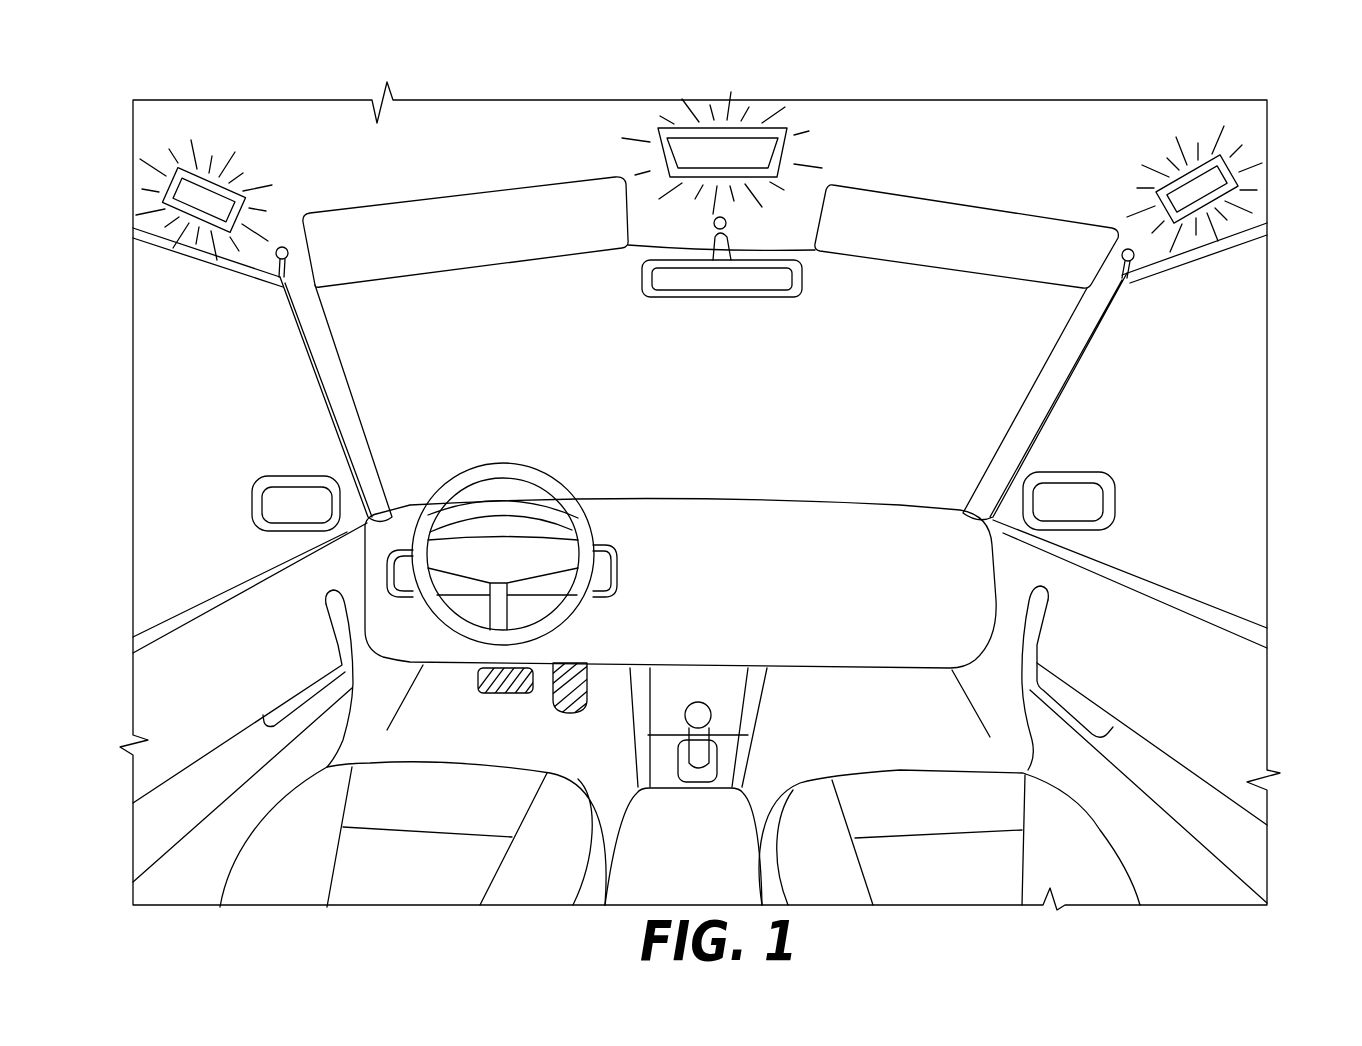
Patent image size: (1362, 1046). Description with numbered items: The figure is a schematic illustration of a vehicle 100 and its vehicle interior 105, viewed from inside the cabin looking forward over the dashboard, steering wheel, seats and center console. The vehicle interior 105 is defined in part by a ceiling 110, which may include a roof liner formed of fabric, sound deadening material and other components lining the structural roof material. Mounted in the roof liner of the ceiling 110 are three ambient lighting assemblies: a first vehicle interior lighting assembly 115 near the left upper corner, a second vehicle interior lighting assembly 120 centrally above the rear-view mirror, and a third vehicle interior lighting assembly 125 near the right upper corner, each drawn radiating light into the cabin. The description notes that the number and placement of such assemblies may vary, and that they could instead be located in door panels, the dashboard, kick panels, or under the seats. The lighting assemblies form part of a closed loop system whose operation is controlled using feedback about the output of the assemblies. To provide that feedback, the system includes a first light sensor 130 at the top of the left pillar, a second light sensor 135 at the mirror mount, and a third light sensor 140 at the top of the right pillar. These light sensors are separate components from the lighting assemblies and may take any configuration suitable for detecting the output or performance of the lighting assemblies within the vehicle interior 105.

The vehicle 100 is at (1300, 150).
The vehicle interior 105 is at (323, 99).
The ceiling 110 is at (497, 157).
The first vehicle interior lighting assembly 115 is at (183, 192).
The second vehicle interior lighting assembly 120 is at (712, 155).
The third vehicle interior lighting assembly 125 is at (1200, 185).
The first light sensor 130 is at (281, 262).
The second light sensor 135 is at (718, 238).
The third light sensor 140 is at (1130, 268).